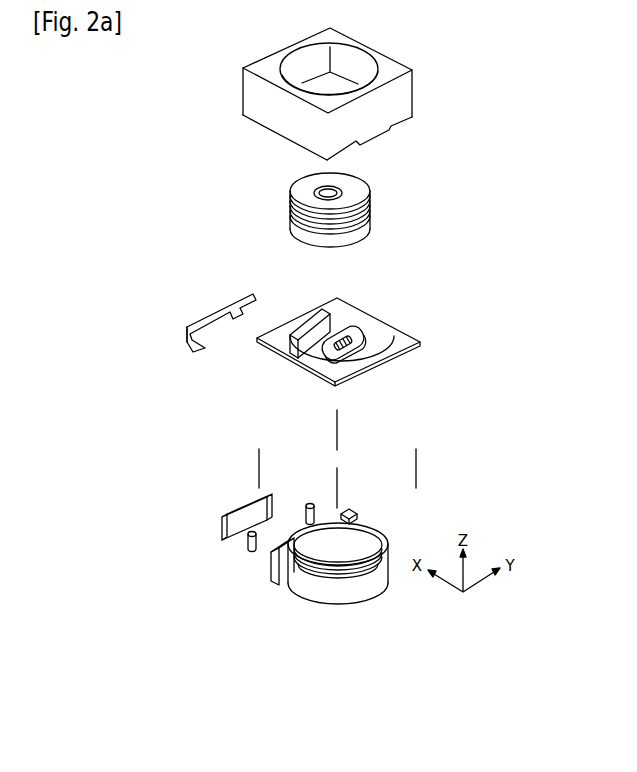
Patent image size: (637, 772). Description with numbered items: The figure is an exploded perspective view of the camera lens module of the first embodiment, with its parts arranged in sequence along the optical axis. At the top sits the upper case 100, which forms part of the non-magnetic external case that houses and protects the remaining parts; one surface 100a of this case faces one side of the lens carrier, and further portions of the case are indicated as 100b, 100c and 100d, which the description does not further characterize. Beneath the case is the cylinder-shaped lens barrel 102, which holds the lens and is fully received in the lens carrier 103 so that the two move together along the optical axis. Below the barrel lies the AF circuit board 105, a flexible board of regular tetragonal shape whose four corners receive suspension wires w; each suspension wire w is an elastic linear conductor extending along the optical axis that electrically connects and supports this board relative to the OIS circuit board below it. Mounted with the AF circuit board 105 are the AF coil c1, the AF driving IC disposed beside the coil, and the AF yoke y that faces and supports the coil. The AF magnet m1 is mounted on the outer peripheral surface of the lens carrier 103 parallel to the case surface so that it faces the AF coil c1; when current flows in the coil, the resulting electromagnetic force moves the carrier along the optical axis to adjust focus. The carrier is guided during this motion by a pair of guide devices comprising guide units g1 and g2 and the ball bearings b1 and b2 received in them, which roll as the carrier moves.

The upper case 100 is at (408, 60).
The one surface of the external case 100a is at (303, 63).
The side wall of cover 100b is at (403, 96).
The side wall of cover 100c is at (258, 96).
The partition of cover opening 100d is at (361, 64).
The lens barrel 102 is at (371, 213).
The AF circuit board 105 is at (415, 328).
The AF driving IC is at (295, 332).
The AF coil c1 is at (350, 330).
The AF yoke y is at (213, 310).
The suspension wire w is at (340, 421).
The AF magnet m1 is at (220, 526).
The ball bearing b1 is at (250, 550).
The ball bearing b2 is at (310, 503).
The guide unit g1 is at (271, 572).
The guide unit g2 is at (358, 515).
The lens carrier 103 is at (365, 592).